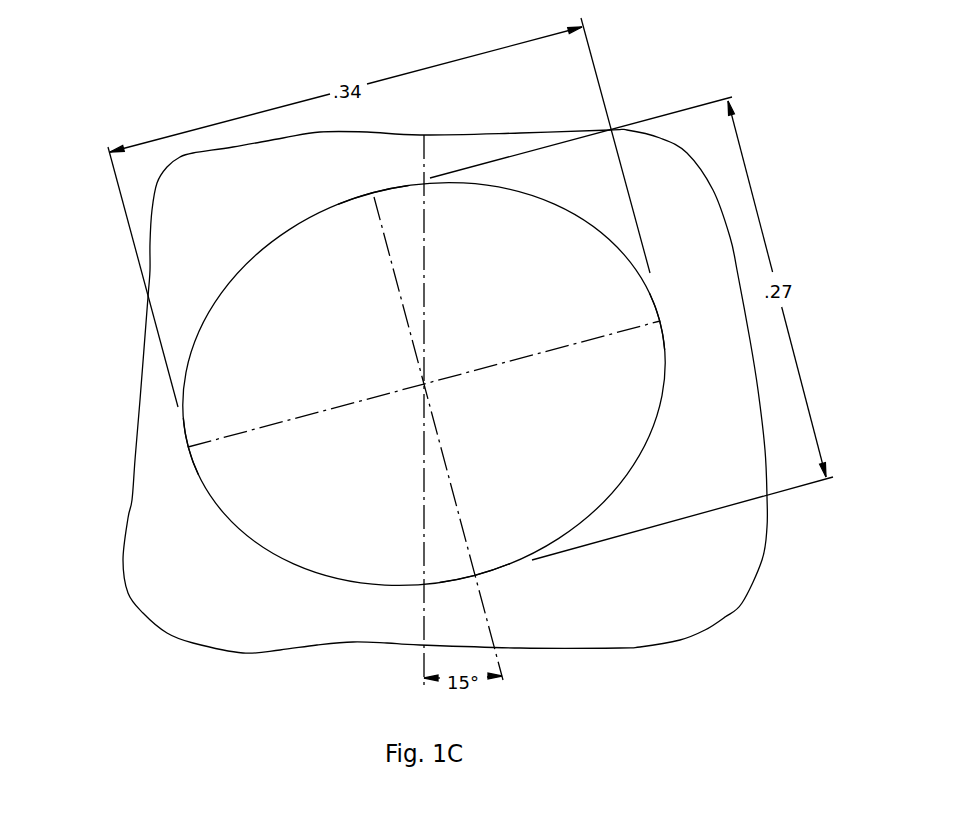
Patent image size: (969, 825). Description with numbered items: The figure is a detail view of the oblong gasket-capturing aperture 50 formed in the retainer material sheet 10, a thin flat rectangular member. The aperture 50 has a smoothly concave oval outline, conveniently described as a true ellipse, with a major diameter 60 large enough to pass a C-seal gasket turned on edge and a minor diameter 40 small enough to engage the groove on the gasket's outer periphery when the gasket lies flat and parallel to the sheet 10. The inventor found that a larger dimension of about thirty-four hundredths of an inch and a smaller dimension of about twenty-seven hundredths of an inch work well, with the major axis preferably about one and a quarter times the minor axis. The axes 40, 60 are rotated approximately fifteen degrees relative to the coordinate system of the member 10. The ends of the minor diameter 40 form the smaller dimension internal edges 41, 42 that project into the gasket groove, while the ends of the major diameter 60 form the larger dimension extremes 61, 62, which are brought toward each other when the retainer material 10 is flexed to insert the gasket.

The retainer material sheet 10 is at (128, 520).
The gasket-capturing aperture 50 is at (372, 371).
The minor diameter 40 is at (460, 517).
The smaller dimension internal edge 41 is at (503, 560).
The smaller dimension internal edge 42 is at (350, 202).
The major diameter 60 is at (282, 423).
The larger dimension extreme 61 is at (193, 462).
The larger dimension extreme 62 is at (652, 297).